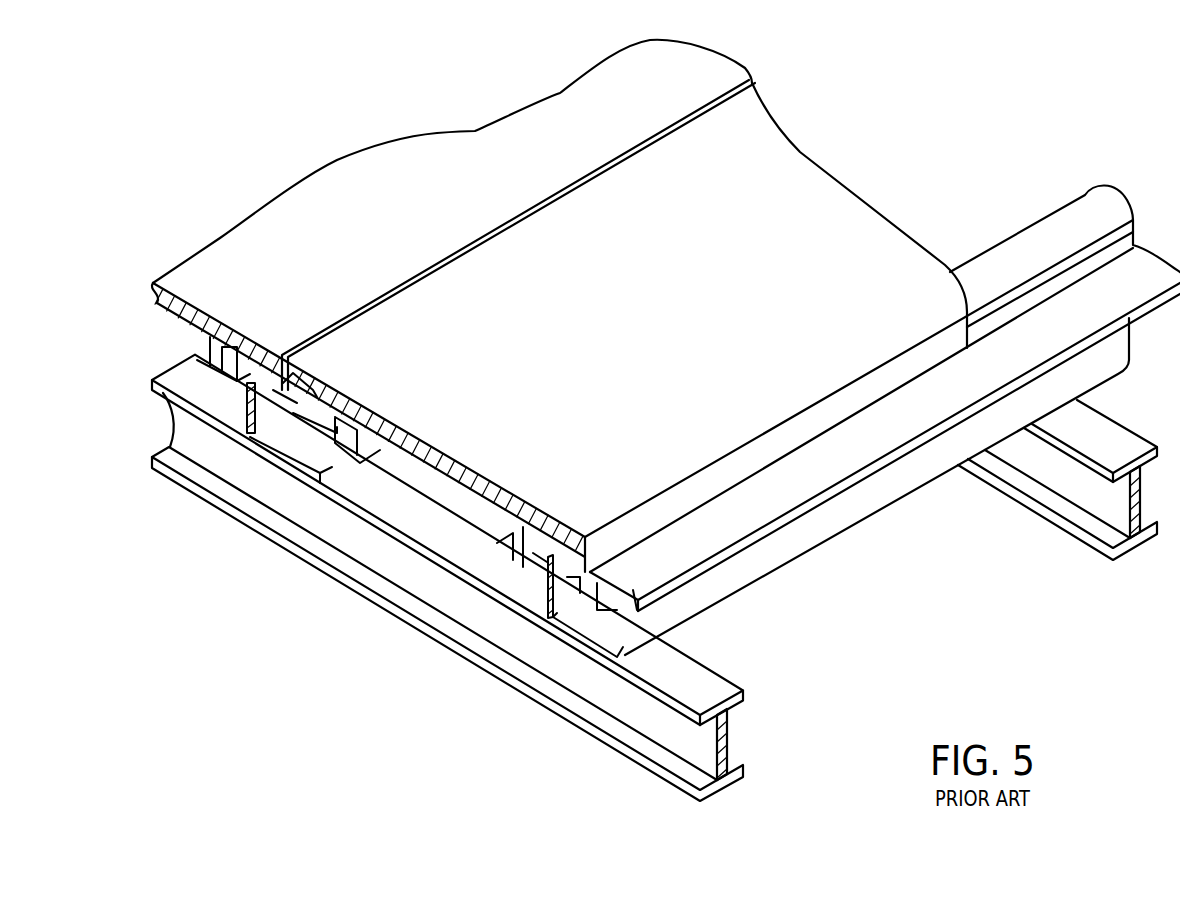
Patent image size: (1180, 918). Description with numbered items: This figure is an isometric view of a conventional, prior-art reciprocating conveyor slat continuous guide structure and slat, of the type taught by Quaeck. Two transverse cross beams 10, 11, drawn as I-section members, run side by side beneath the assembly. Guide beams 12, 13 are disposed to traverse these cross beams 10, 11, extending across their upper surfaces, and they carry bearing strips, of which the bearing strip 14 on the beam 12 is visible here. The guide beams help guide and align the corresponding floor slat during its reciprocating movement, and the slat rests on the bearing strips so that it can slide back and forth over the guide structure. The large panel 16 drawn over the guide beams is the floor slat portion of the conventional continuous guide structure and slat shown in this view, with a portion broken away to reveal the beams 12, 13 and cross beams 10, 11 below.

The cross beam 10 is at (727, 788).
The cross beam 11 is at (1130, 542).
The beam 12 is at (294, 440).
The beam 13 is at (587, 622).
The bearing strip 14 is at (705, 548).
The deck panel 16 is at (250, 248).